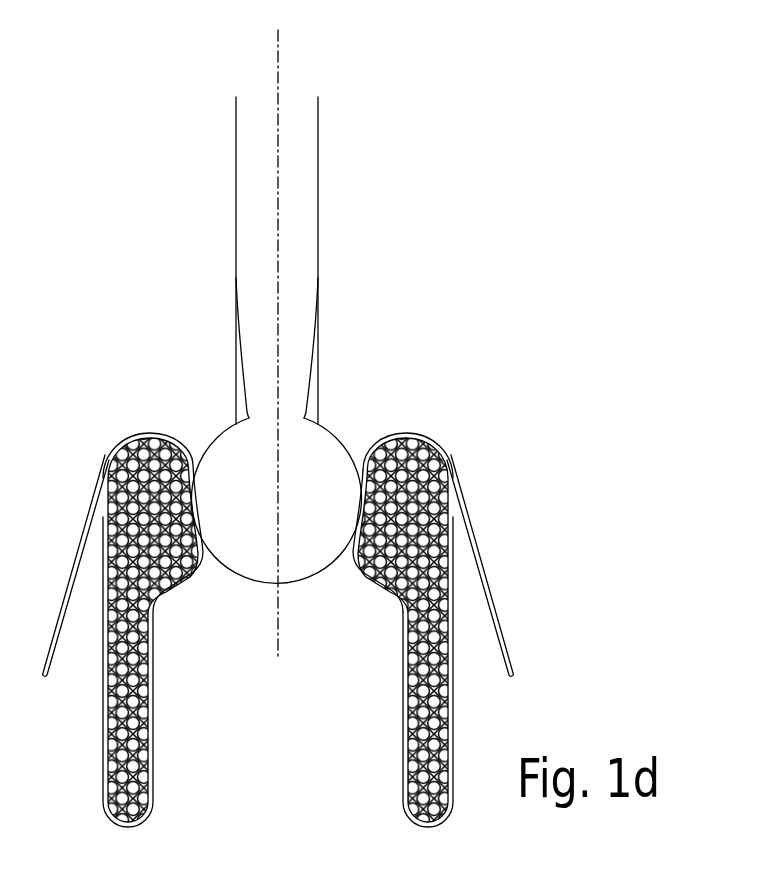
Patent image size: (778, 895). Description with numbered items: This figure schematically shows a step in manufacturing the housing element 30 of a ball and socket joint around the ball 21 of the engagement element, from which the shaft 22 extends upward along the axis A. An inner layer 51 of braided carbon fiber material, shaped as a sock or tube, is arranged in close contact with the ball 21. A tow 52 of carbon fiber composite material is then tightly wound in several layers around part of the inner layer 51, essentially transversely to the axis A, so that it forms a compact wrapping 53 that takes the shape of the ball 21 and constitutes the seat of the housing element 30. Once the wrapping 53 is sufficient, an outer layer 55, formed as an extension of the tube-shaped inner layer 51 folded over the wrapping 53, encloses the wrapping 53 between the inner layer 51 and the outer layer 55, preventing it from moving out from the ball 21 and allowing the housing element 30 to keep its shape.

The axis A is at (278, 107).
The ball 21 is at (334, 431).
The shaft 22 is at (235, 227).
The housing element 30 is at (442, 603).
The inner layer 51 is at (347, 558).
The tow 52 is at (388, 586).
The wrapping 53 is at (430, 463).
The outer layer 55 is at (452, 707).